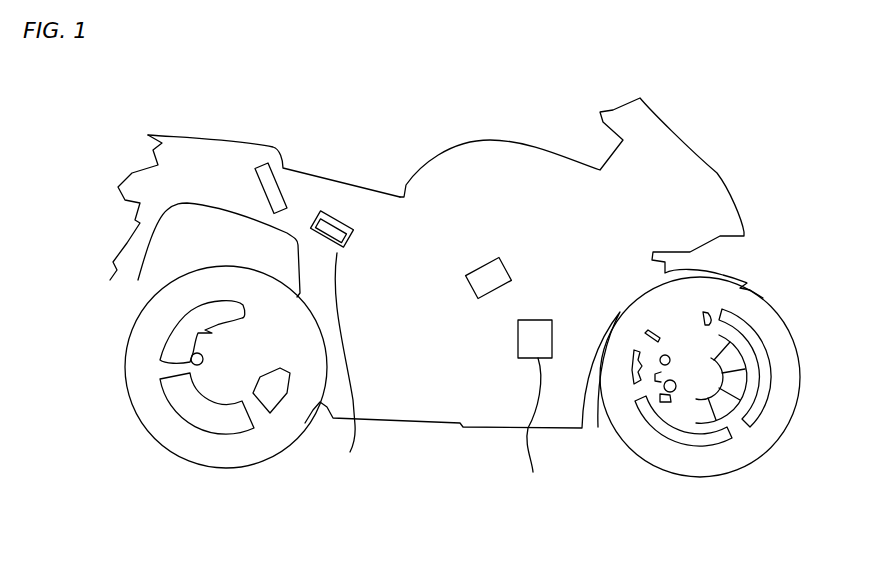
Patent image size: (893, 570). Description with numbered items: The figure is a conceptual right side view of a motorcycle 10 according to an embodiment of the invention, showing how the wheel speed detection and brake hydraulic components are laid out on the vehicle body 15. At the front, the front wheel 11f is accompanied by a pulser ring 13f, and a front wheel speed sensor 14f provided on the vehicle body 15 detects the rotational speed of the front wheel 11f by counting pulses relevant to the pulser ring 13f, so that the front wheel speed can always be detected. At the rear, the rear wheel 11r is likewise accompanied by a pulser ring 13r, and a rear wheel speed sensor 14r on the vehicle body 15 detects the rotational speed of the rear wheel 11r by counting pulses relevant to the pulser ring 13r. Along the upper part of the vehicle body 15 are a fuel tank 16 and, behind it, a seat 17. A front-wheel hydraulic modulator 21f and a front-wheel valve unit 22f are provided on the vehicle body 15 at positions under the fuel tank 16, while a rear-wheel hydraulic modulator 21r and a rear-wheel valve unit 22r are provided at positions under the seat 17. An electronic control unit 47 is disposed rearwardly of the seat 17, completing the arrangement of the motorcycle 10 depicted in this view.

The motorcycle 10 is at (440, 460).
The rear wheel 11r is at (165, 438).
The front wheel 11f is at (757, 440).
The pulser ring 13r is at (227, 400).
The pulser ring 13f is at (697, 393).
The rear wheel speed sensor 14r is at (190, 357).
The front wheel speed sensor 14f is at (665, 392).
The vehicle body 15 is at (488, 413).
The fuel tank 16 is at (503, 157).
The seat 17 is at (320, 190).
The electronic control unit 47 is at (257, 187).
The rear-wheel hydraulic modulator 21r is at (347, 367).
The front-wheel hydraulic modulator 21f is at (543, 410).
The rear-wheel valve unit 22r is at (338, 217).
The front-wheel valve unit 22f is at (478, 260).